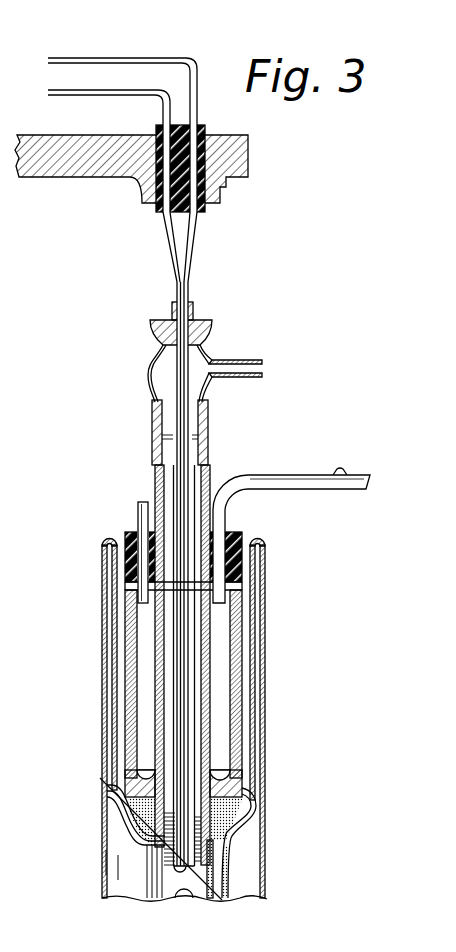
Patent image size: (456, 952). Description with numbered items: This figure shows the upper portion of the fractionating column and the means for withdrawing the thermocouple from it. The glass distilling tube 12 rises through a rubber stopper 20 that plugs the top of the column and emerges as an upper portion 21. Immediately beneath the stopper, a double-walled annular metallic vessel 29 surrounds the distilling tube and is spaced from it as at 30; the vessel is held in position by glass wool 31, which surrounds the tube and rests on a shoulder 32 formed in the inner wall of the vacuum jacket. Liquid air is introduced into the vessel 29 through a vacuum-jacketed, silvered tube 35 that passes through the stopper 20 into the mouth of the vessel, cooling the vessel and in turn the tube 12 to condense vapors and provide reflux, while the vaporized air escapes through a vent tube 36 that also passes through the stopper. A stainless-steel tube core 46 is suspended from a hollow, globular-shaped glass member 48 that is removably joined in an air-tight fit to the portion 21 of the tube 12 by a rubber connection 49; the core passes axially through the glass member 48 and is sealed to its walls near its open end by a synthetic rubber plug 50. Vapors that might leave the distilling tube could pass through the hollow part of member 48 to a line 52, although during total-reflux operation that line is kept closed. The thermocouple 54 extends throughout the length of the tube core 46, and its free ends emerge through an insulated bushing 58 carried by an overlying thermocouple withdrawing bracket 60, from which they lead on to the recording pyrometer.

The distilling tube 12 is at (205, 847).
The stopper 20 is at (240, 532).
The portion of tube extending out through column 21 is at (203, 482).
The double-walled annular metallic vessel 29 is at (237, 680).
The space 30 is at (207, 738).
The glass wool 31 is at (262, 780).
The shoulder 32 is at (263, 805).
The vacuum-jacketed silvered tube 35 is at (310, 475).
The vent tube 36 is at (135, 508).
The tube core 46 is at (190, 362).
The hollow globular-shaped glass member 48 is at (147, 375).
The rubber connection 49 is at (155, 417).
The rubber plug 50 is at (195, 318).
The line 52 is at (252, 358).
The thermocouple 54 is at (185, 283).
The insulated bushing 58 is at (205, 130).
The thermocouple withdrawing bracket 60 is at (90, 172).